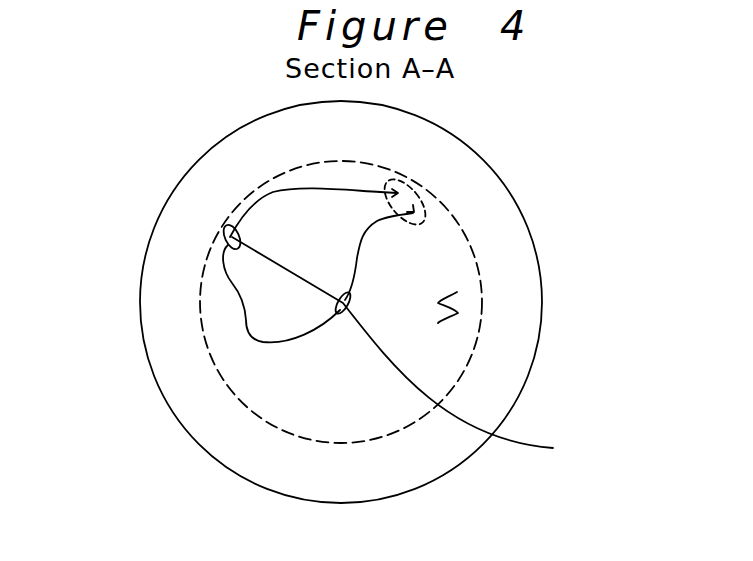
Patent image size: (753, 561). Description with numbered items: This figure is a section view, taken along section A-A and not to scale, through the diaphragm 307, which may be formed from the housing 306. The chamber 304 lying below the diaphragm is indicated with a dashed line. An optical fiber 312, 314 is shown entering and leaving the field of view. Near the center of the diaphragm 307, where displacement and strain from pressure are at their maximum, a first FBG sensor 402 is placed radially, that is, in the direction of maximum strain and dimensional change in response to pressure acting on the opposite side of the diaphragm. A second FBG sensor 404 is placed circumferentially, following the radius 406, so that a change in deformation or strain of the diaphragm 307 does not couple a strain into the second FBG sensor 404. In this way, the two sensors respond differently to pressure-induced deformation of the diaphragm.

The chamber 304 is at (485, 267).
The housing 306 is at (543, 342).
The diaphragm 307 is at (438, 303).
The optical fiber 312 is at (527, 188).
The optical fiber 314 is at (440, 208).
The first FBG sensor 402 is at (423, 353).
The second FBG sensor 404 is at (228, 233).
The radius 406 is at (283, 277).